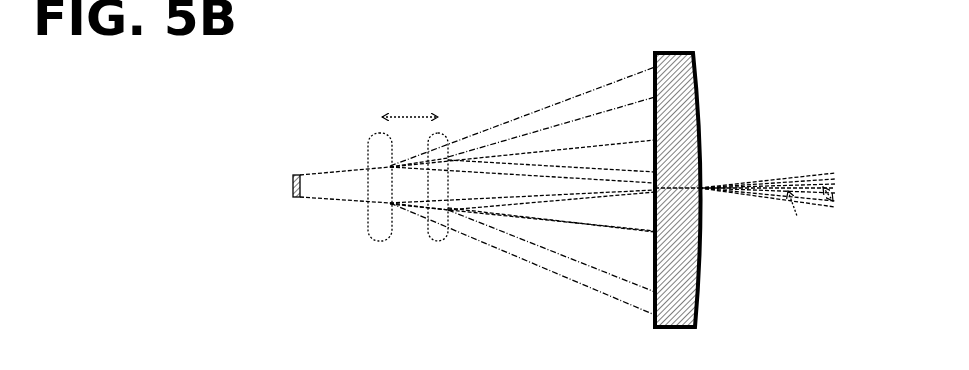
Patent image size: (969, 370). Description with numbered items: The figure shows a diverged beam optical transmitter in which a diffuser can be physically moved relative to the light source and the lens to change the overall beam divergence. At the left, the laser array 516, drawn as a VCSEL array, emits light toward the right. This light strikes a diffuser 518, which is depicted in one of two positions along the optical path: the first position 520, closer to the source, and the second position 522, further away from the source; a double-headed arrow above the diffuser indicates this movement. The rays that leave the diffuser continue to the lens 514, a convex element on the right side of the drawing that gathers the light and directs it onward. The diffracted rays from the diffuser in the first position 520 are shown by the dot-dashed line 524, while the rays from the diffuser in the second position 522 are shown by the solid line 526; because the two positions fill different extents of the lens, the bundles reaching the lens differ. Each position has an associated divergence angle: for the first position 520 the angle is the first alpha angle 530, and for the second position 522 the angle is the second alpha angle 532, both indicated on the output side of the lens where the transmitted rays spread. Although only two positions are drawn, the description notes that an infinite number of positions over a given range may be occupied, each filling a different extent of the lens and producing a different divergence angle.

The lens 514 is at (662, 163).
The laser array 516 is at (291, 196).
The diffuser 518 is at (493, 220).
The position 1 520 is at (521, 251).
The position 2 522 is at (447, 227).
The dot-dashed line 524 is at (562, 276).
The solid line 526 is at (648, 290).
The α1 530 is at (795, 232).
The α2 532 is at (856, 214).